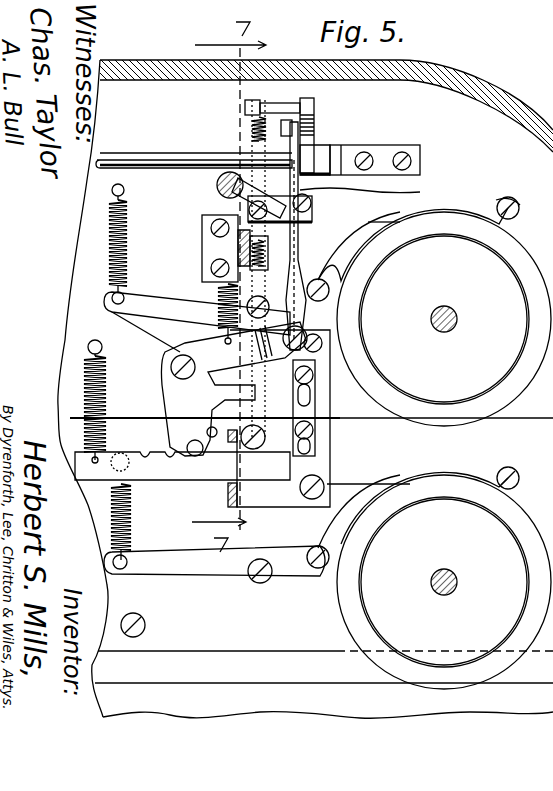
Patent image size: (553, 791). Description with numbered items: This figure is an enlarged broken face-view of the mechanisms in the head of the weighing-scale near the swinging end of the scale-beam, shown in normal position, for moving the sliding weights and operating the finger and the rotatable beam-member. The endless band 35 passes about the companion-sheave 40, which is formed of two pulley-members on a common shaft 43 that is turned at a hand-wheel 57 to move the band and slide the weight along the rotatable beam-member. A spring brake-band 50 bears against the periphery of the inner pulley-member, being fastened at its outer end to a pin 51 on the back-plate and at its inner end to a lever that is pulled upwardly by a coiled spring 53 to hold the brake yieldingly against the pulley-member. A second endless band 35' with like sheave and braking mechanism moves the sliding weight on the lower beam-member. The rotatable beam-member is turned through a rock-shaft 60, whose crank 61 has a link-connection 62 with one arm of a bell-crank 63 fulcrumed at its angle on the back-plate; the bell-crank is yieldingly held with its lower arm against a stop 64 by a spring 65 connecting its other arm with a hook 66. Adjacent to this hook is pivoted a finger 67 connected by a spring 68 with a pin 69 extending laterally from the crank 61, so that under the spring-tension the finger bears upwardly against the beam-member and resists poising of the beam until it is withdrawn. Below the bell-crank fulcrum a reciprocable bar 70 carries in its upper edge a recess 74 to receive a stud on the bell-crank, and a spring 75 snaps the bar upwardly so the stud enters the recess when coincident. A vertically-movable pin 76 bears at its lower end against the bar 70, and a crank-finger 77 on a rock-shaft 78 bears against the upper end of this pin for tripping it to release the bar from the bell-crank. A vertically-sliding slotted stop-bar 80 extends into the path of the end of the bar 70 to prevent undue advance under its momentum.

The endless band 35 is at (413, 231).
The endless band 35' is at (398, 564).
The companion-sheave 40 is at (528, 256).
The shaft 43 is at (447, 306).
The spring brake-band 50 is at (500, 203).
The pin 51 is at (530, 202).
The coiled spring 53 is at (109, 222).
The hand-wheel 57 is at (165, 298).
The rock-shaft 60 is at (143, 158).
The crank 61 is at (316, 128).
The link-connection 62 is at (299, 246).
The bell-crank 63 is at (180, 352).
The stop 64 is at (180, 395).
The spring 65 is at (226, 326).
The hook 66 is at (250, 252).
The finger 67 is at (240, 246).
The spring 68 is at (246, 131).
The pin 69 is at (265, 103).
The bar 70 is at (193, 480).
The recess 74 is at (165, 453).
The spring 75 is at (84, 384).
The vertically-movable pin 76 is at (280, 280).
The crank-finger 77 is at (325, 190).
The rock-shaft 78 is at (205, 218).
The slotted stop-bar 80 is at (316, 446).